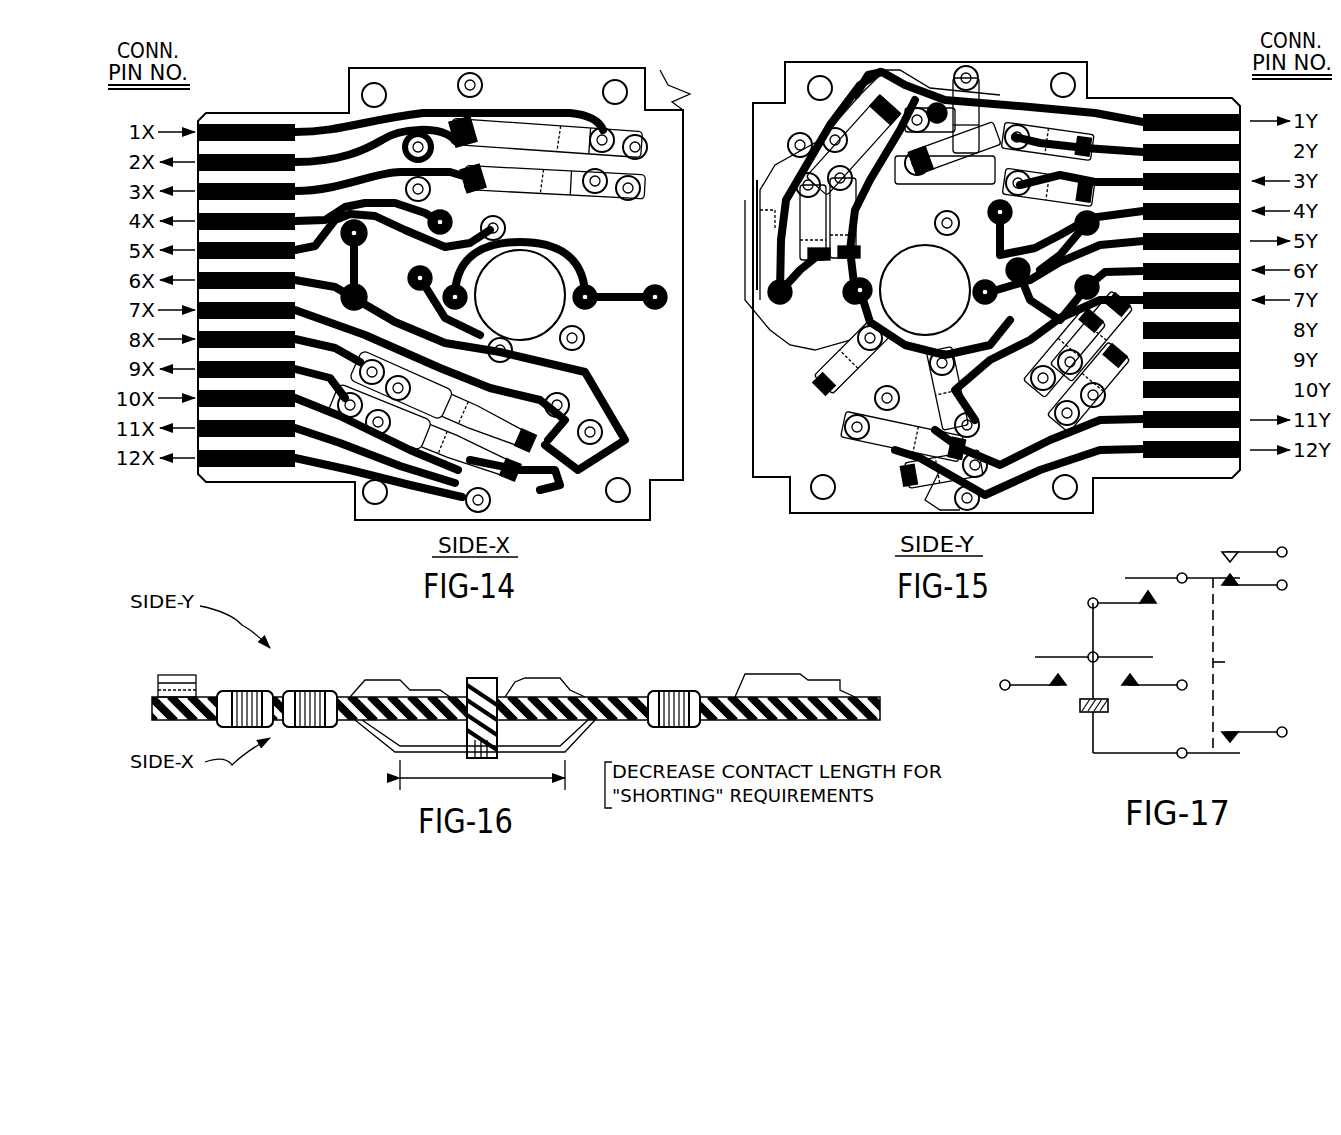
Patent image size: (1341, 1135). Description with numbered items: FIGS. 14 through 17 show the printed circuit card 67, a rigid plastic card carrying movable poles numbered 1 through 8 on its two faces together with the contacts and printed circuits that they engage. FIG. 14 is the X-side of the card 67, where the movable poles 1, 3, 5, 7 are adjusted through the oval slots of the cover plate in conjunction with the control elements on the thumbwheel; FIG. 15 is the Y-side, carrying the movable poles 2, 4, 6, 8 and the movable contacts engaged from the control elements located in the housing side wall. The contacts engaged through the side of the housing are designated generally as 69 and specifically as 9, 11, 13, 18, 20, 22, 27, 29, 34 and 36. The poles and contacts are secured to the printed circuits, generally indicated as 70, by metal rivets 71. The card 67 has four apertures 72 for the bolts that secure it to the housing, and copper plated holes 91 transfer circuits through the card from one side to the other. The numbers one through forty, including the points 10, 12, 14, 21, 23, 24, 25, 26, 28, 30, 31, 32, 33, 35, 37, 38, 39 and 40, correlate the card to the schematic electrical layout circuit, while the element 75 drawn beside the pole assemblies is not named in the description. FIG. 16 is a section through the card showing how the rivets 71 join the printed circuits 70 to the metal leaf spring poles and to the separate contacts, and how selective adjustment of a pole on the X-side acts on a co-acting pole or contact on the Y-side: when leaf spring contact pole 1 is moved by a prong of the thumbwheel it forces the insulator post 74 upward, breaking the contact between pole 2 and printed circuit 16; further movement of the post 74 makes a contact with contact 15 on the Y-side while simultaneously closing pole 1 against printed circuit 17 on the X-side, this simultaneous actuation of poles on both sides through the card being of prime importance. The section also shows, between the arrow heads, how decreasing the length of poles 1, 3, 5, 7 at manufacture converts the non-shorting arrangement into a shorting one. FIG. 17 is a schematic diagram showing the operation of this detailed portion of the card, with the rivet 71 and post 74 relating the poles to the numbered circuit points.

In FIG. 14, the movable pole 1 is at (484, 142).
In FIG. 16, the movable pole 1 is at (635, 735).
In FIG. 17, the movable pole 1 is at (1166, 762).
In FIG. 15, the movable pole 2 is at (995, 160).
In FIG. 16, the movable pole 2 is at (502, 680).
In FIG. 17, the movable pole 2 is at (1200, 566).
In FIG. 14, the movable pole 3 is at (513, 197).
In FIG. 15, the movable pole 4 is at (983, 219).
In FIG. 14, the movable pole 5 is at (445, 395).
In FIG. 15, the movable pole 6 is at (904, 424).
In FIG. 14, the movable pole 7 is at (512, 490).
In FIG. 15, the movable pole 8 is at (905, 462).
In FIG. 15, the contact 9 is at (752, 198).
In FIG. 16, the contact 9 is at (185, 676).
In FIG. 17, the contact 9 is at (1064, 646).
In FIG. 15, the circuit correlation point 10 is at (760, 245).
In FIG. 16, the circuit correlation point 10 is at (195, 678).
In FIG. 17, the circuit correlation point 10 is at (1033, 691).
In FIG. 15, the contact 11 is at (1090, 138).
In FIG. 16, the contact 11 is at (835, 675).
In FIG. 17, the contact 11 is at (1182, 569).
In FIG. 15, the circuit correlation point 12 is at (1100, 152).
In FIG. 16, the circuit correlation point 12 is at (850, 690).
In FIG. 17, the circuit correlation point 12 is at (1122, 609).
In FIG. 15, the contact 13 is at (860, 105).
In FIG. 16, the contact 13 is at (430, 672).
In FIG. 17, the contact 13 is at (1121, 648).
In FIG. 15, the circuit correlation point 14 is at (895, 80).
In FIG. 16, the circuit correlation point 14 is at (488, 646).
In FIG. 17, the circuit correlation point 14 is at (1154, 691).
In FIG. 15, the contact 15 is at (955, 92).
In FIG. 16, the contact 15 is at (580, 670).
In FIG. 17, the contact 15 is at (1254, 545).
In FIG. 15, the printed circuit 16 is at (1000, 160).
In FIG. 16, the printed circuit 16 is at (535, 680).
In FIG. 17, the printed circuit 16 is at (1254, 592).
In FIG. 14, the printed circuit 17 is at (412, 158).
In FIG. 16, the printed circuit 17 is at (640, 722).
In FIG. 17, the printed circuit 17 is at (1254, 725).
In FIG. 15, the contact 18 is at (820, 229).
In FIG. 15, the contact 20 is at (1065, 246).
In FIG. 15, the circuit correlation point 21 is at (1104, 192).
In FIG. 15, the contact 22 is at (872, 238).
In FIG. 15, the circuit correlation point 23 is at (880, 283).
In FIG. 15, the circuit correlation point 24 is at (935, 212).
In FIG. 15, the circuit correlation point 25 is at (905, 190).
In FIG. 14, the circuit correlation point 26 is at (485, 203).
In FIG. 15, the contact 27 is at (985, 362).
In FIG. 15, the circuit correlation point 28 is at (962, 315).
In FIG. 15, the contact 29 is at (1085, 323).
In FIG. 15, the circuit correlation point 30 is at (1005, 270).
In FIG. 15, the circuit correlation point 31 is at (876, 364).
In FIG. 15, the circuit correlation point 32 is at (948, 430).
In FIG. 14, the circuit correlation point 33 is at (532, 420).
In FIG. 15, the contact 34 is at (1015, 425).
In FIG. 15, the circuit correlation point 35 is at (930, 362).
In FIG. 15, the contact 36 is at (815, 355).
In FIG. 15, the circuit correlation point 37 is at (805, 400).
In FIG. 15, the circuit correlation point 38 is at (905, 480).
In FIG. 15, the circuit correlation point 39 is at (985, 487).
In FIG. 14, the circuit correlation point 40 is at (560, 484).
In FIG. 14, the printed circuit card 67 is at (243, 497).
In FIG. 15, the printed circuit card 67 is at (1222, 478).
In FIG. 15, the contacts 69 is at (880, 110).
In FIG. 16, the contacts 69 is at (160, 678).
In FIG. 14, the printed circuits 70 is at (322, 122).
In FIG. 15, the printed circuits 70 is at (1100, 478).
In FIG. 14, the metal rivets 71 is at (691, 81).
In FIG. 16, the metal rivets 71 is at (303, 690).
In FIG. 17, the metal rivets 71 is at (1080, 705).
In FIG. 14, the apertures 72 is at (380, 85).
In FIG. 15, the apertures 72 is at (942, 286).
In FIG. 16, the insulator post 74 is at (515, 732).
In FIG. 17, the insulator post 74 is at (1225, 662).
In FIG. 14, the contact spring 75 is at (540, 164).
In FIG. 16, the contact spring 75 is at (455, 740).
In FIG. 14, the copper plated holes 91 is at (366, 268).